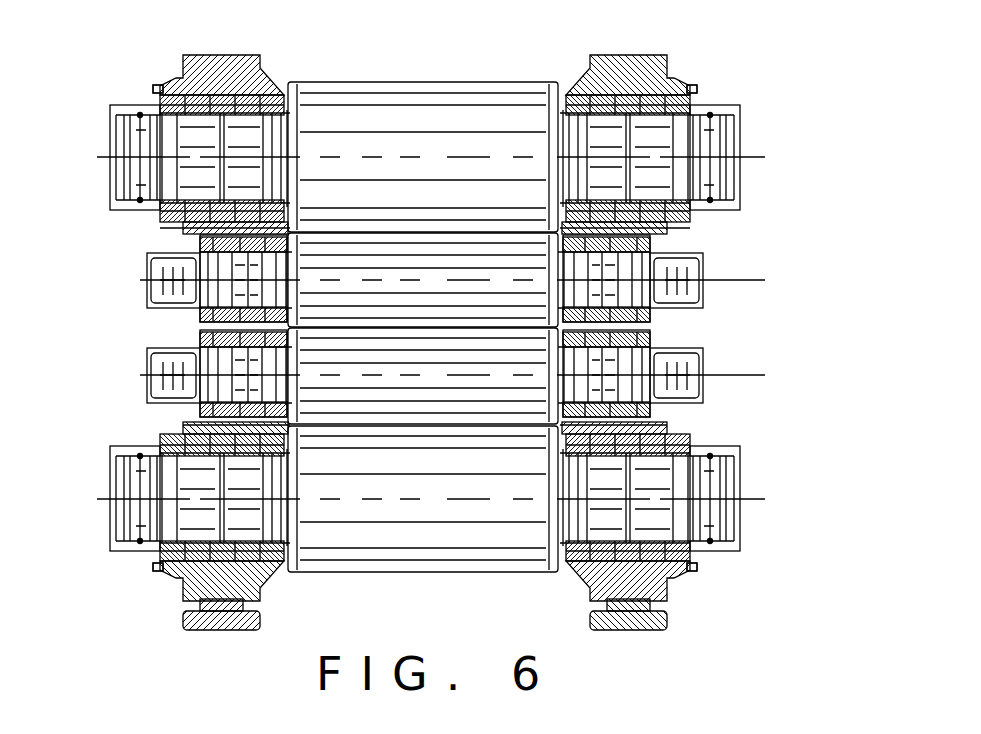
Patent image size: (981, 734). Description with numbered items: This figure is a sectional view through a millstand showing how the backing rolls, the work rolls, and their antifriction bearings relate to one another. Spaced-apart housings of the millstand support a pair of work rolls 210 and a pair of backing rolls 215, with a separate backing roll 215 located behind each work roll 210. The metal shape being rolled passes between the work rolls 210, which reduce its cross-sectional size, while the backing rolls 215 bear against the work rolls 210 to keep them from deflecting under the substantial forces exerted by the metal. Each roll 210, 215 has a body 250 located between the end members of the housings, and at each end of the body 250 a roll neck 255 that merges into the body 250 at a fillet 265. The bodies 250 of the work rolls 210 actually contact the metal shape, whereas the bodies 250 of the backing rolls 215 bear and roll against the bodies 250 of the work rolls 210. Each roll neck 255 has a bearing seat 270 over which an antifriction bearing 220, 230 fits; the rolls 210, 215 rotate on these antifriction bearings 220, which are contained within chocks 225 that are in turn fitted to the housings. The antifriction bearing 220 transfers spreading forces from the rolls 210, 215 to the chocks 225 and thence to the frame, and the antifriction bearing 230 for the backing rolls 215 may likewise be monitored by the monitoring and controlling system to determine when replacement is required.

The work roll 210 is at (702, 266).
The backing roll 215 is at (462, 82).
The antifriction bearing 220 is at (182, 243).
The chock 225 is at (608, 52).
The antifriction bearing 230 is at (182, 428).
The body 250 is at (427, 255).
The roll neck 255 is at (170, 478).
The fillet 265 is at (278, 95).
The bearing seat 270 is at (258, 84).